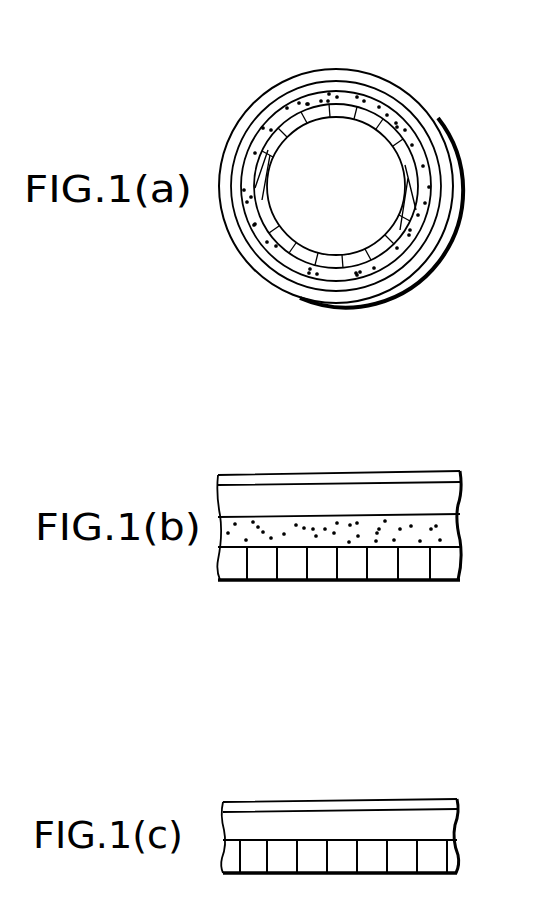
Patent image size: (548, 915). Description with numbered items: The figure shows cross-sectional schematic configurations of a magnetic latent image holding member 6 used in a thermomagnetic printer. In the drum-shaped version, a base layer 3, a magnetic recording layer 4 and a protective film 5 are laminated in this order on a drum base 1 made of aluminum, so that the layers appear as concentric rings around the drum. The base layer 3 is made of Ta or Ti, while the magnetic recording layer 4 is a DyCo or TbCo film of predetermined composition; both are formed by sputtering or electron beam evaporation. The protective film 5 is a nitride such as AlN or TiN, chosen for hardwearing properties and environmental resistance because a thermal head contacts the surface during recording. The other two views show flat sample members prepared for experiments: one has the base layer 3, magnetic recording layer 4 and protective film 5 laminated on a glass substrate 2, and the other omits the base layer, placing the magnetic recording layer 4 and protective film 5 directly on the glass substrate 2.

In FIG. 1A, the drum base 1 is at (388, 128).
In FIG. 1B, the glass substrate 2 is at (447, 565).
In FIG. 1C, the glass substrate 2 is at (448, 856).
In FIG. 1A, the base layer 3 is at (410, 137).
In FIG. 1B, the base layer 3 is at (445, 537).
In FIG. 1A, the magnetic recording layer 4 is at (433, 163).
In FIG. 1B, the magnetic recording layer 4 is at (450, 500).
In FIG. 1C, the magnetic recording layer 4 is at (442, 830).
In FIG. 1A, the protective film 5 is at (442, 218).
In FIG. 1B, the protective film 5 is at (452, 478).
In FIG. 1C, the protective film 5 is at (450, 807).
In FIG. 1A, the magnetic latent image holding member 6 is at (434, 89).
In FIG. 1B, the magnetic latent image holding member 6 is at (297, 468).
In FIG. 1C, the magnetic latent image holding member 6 is at (273, 798).